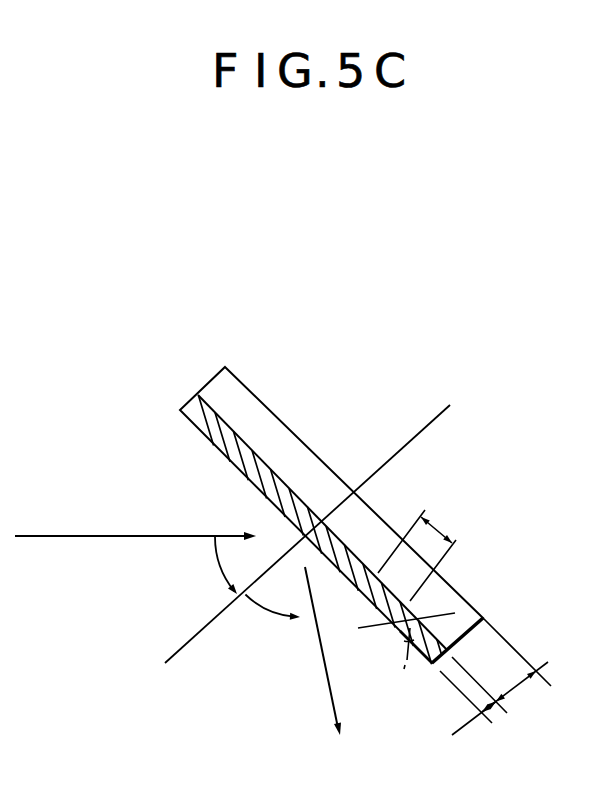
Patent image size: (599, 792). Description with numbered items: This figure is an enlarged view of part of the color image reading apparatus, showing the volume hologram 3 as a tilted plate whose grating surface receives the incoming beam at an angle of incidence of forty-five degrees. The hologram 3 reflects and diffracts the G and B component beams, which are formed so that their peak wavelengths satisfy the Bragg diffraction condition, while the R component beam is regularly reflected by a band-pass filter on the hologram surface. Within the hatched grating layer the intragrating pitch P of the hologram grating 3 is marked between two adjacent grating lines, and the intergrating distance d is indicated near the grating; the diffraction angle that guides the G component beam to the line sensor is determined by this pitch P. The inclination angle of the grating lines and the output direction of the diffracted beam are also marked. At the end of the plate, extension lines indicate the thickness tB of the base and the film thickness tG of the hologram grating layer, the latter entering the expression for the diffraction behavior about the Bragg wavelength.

The volume hologram 3 is at (218, 353).
The grating pitch P is at (417, 548).
The intergrating distance d is at (406, 606).
The base thickness tB is at (501, 667).
The film thickness tG is at (480, 707).